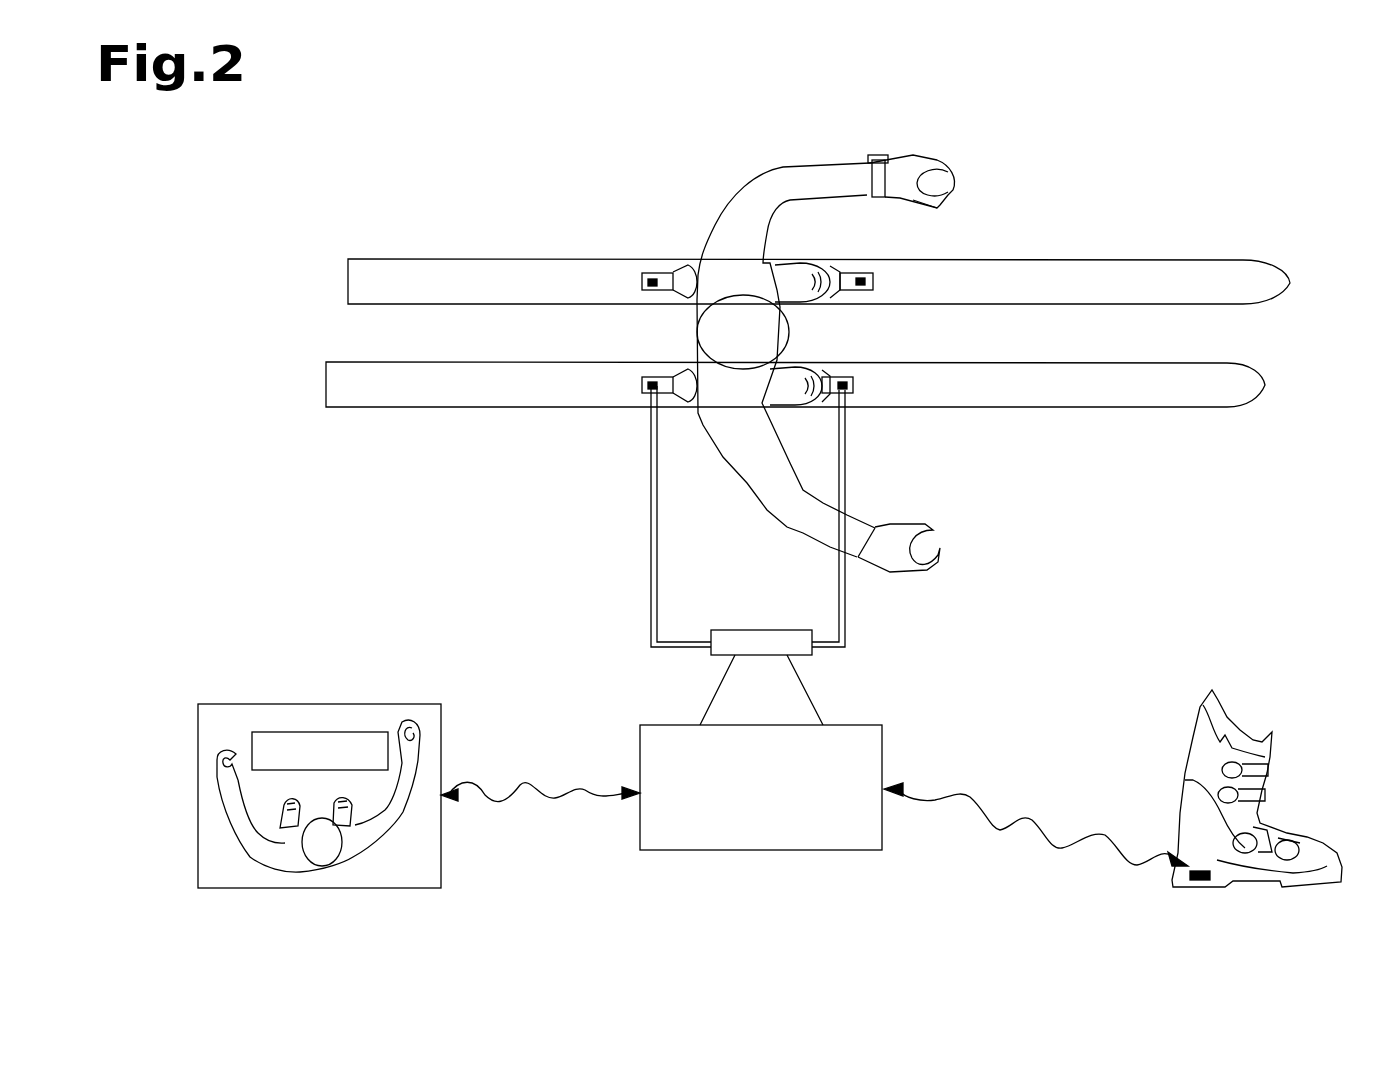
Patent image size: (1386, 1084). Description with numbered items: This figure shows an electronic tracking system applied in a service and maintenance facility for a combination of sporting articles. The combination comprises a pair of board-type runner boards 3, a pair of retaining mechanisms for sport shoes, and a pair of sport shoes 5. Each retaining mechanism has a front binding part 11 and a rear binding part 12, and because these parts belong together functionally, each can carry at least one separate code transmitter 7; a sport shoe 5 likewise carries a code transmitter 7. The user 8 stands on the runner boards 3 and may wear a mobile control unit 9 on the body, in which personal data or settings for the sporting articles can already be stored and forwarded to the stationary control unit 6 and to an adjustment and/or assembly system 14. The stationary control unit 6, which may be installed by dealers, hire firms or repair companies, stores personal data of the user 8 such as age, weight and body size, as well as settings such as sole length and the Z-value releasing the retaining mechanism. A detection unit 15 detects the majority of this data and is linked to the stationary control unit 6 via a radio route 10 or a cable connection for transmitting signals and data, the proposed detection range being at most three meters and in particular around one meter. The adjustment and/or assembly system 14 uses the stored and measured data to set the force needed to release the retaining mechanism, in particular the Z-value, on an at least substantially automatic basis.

The board-type runner boards 3 is at (1272, 287).
The sport shoes 5 is at (1197, 748).
The control unit 6 is at (672, 845).
The code transmitters 7 is at (645, 275).
The user 8 is at (748, 207).
The control unit 9 is at (880, 165).
The radio route 10 is at (515, 797).
The front binding part 11 is at (847, 290).
The rear binding part 12 is at (665, 277).
The adjustment and/or assembly system 14 is at (798, 644).
The detection unit 15 is at (214, 716).